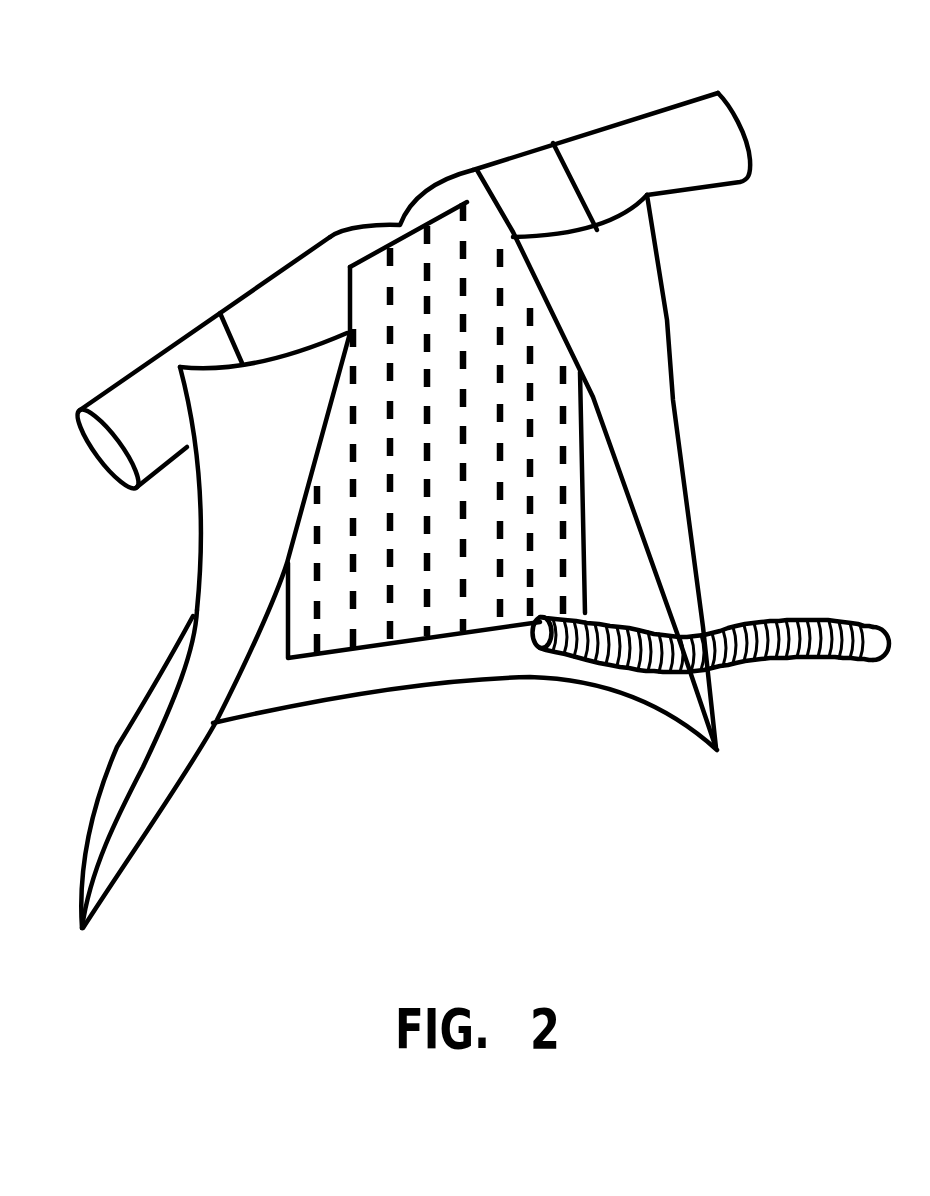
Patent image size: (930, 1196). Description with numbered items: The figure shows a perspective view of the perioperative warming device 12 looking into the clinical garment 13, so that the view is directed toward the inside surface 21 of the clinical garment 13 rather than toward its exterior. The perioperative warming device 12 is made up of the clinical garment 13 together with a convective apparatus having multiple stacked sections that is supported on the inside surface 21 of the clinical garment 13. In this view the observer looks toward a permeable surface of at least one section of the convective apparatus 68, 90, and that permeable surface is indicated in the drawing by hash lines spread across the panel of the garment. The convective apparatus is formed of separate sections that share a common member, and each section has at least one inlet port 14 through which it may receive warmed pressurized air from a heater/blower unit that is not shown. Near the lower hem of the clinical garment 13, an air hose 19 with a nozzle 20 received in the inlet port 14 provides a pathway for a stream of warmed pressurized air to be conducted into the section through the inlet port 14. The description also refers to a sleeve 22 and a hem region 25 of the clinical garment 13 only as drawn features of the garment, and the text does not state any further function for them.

The perioperative warming device 12 is at (745, 331).
The sleeve 22 is at (718, 93).
The clinical garment 13 is at (190, 622).
The bottom hem edge 25 is at (243, 723).
The inside surface 21 is at (297, 678).
The convective apparatus section 68 is at (440, 496).
The convective apparatus section 90 is at (410, 613).
The air hose 19 is at (807, 660).
The inlet port 14 is at (578, 690).
The nozzle 20 is at (552, 648).